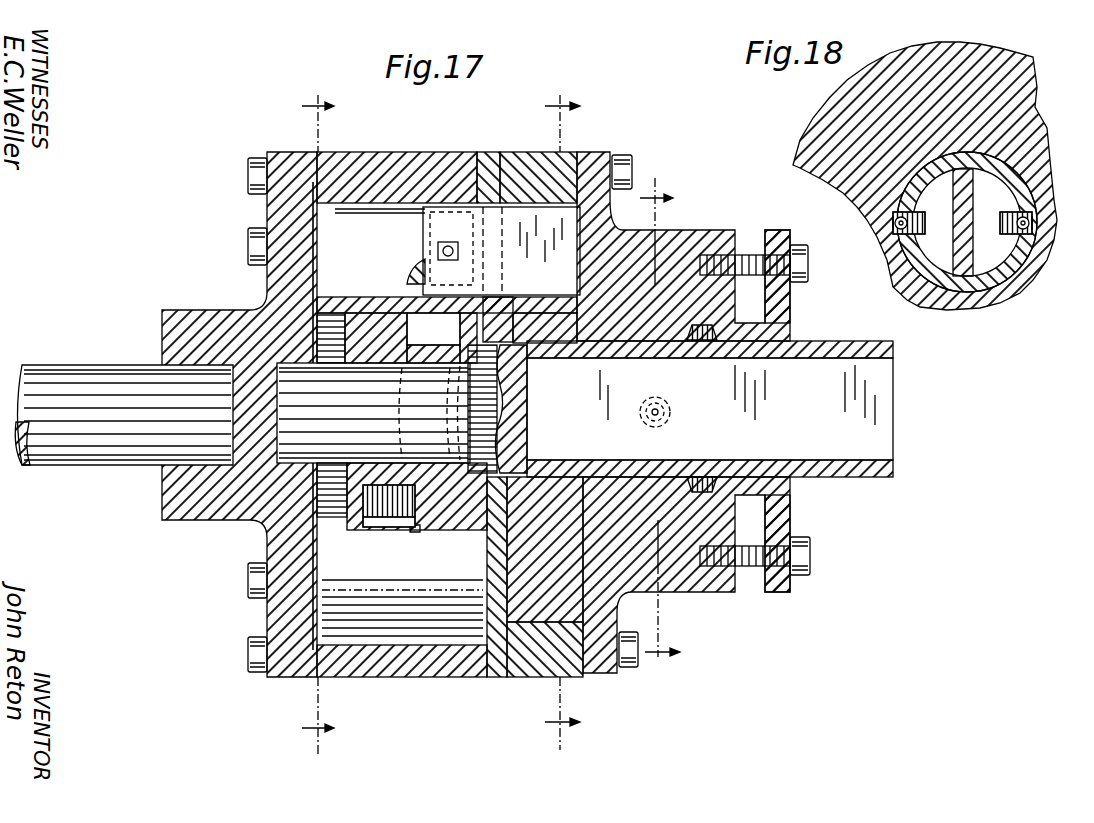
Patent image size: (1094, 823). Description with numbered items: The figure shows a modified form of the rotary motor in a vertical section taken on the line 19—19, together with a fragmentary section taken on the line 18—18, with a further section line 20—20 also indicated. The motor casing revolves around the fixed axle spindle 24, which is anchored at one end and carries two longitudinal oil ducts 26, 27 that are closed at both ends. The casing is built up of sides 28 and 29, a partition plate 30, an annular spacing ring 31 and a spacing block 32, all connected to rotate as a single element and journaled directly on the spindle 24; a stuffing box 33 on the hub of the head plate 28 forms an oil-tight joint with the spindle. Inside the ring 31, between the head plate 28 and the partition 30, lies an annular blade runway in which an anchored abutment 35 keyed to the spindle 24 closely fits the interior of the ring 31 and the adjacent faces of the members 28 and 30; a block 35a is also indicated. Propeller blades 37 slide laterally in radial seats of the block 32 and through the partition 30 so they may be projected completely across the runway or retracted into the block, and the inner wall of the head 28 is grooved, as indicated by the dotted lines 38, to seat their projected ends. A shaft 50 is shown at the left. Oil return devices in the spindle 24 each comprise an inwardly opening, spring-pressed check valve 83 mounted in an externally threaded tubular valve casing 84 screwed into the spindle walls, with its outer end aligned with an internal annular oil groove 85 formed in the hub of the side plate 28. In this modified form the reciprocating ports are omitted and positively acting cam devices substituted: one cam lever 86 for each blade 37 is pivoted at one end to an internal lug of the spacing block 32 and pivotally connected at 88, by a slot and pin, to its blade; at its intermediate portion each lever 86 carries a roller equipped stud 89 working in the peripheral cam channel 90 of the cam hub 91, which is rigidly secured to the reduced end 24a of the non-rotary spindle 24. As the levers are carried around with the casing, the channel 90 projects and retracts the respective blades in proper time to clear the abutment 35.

In FIG. 17, the section line 18— 18 is at (660, 422).
In FIG. 17, the section line 19— 19 is at (326, 416).
In FIG. 17, the section line 20— 20 is at (562, 416).
In FIG. 17, the fixed axle spindle 24 is at (824, 341).
In FIG. 17, the reduced portion of the spindle 24a is at (256, 522).
In FIG. 17, the longitudinal oil duct 26 is at (694, 411).
In FIG. 18, the longitudinal oil duct 26 is at (967, 222).
In FIG. 18, the longitudinal oil duct 27 is at (947, 222).
In FIG. 17, the side head plate 28 is at (592, 210).
In FIG. 18, the side head plate 28 is at (855, 197).
In FIG. 17, the side head 29 is at (275, 272).
In FIG. 17, the partition plate 30 is at (481, 163).
In FIG. 17, the annular spacing ring 31 is at (577, 152).
In FIG. 17, the spacing block 32 is at (398, 160).
In FIG. 17, the stuffing box 33 is at (742, 334).
In FIG. 17, the anchored abutment 35 is at (542, 598).
In FIG. 17, the upper block 35a is at (561, 313).
In FIG. 17, the propeller blade 37 is at (541, 238).
In FIG. 17, the groove 38 is at (624, 193).
In FIG. 17, the shaft 50 is at (126, 448).
In FIG. 18, the check valve 83 is at (897, 228).
In FIG. 17, the tubular valve casing 84 is at (670, 400).
In FIG. 18, the tubular valve casing 84 is at (895, 235).
In FIG. 18, the internal annular oil groove 85 is at (892, 221).
In FIG. 17, the cam lever 86 is at (416, 276).
In FIG. 17, the pivotal connection 88 is at (458, 240).
In FIG. 17, the roller equipped stud 89 is at (389, 530).
In FIG. 17, the peripheral cam channel 90 is at (423, 330).
In FIG. 17, the cam hub 91 is at (340, 325).